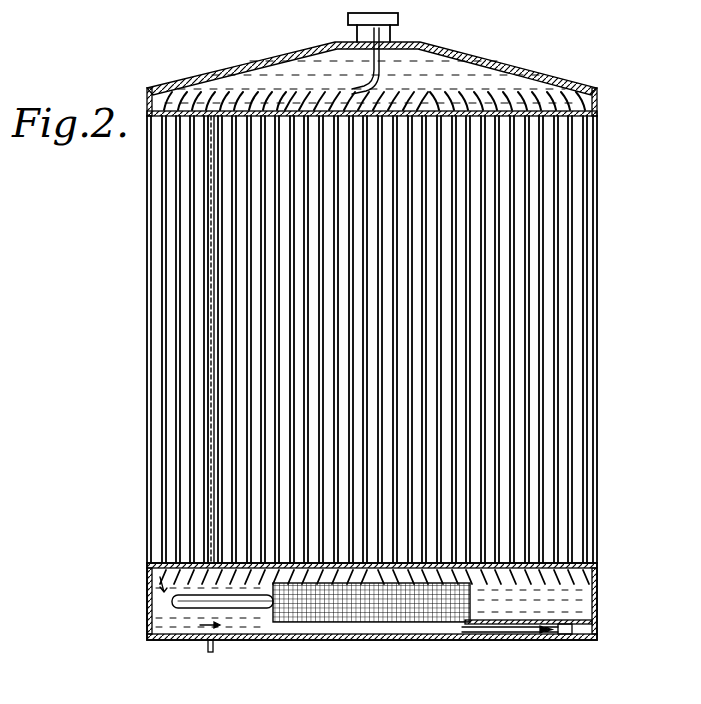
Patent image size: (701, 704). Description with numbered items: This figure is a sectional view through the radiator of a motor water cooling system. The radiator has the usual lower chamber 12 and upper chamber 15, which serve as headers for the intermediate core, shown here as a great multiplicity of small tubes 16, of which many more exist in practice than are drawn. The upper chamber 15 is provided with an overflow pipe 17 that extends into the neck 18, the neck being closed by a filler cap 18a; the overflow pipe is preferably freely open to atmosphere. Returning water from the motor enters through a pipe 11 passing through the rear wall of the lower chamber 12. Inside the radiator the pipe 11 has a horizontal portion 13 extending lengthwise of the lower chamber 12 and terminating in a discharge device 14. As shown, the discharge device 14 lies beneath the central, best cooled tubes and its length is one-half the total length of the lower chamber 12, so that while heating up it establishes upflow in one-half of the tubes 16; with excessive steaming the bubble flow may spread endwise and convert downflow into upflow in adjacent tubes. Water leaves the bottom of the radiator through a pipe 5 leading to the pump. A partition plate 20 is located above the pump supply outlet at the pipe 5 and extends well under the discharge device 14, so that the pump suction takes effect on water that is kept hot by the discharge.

The pipe 5 is at (568, 636).
The pipe 11 is at (165, 598).
The lower chamber 12 is at (170, 622).
The horizontal portion 13 is at (250, 600).
The discharge device 14 is at (372, 622).
The upper chamber 15 is at (487, 85).
The small tubes 16 is at (217, 332).
The overflow pipe 17 is at (383, 63).
The neck 18 is at (356, 30).
The filler cap 18a is at (398, 18).
The partition plate 20 is at (513, 630).